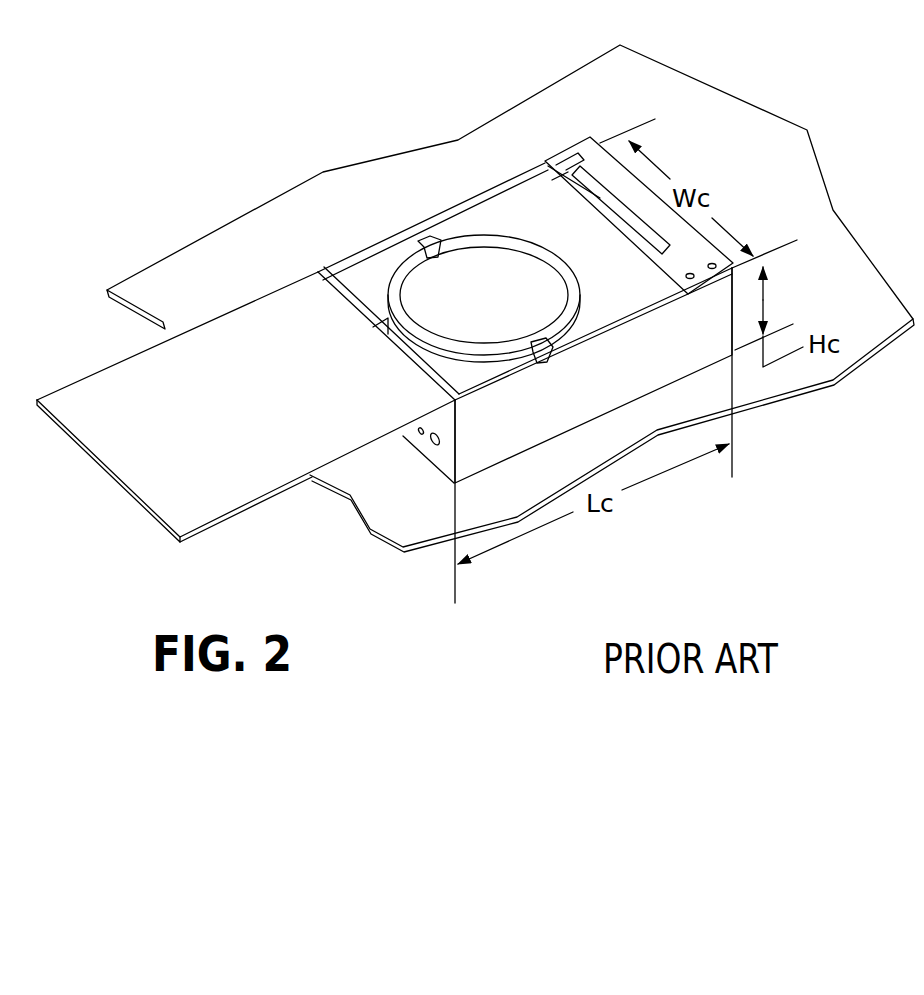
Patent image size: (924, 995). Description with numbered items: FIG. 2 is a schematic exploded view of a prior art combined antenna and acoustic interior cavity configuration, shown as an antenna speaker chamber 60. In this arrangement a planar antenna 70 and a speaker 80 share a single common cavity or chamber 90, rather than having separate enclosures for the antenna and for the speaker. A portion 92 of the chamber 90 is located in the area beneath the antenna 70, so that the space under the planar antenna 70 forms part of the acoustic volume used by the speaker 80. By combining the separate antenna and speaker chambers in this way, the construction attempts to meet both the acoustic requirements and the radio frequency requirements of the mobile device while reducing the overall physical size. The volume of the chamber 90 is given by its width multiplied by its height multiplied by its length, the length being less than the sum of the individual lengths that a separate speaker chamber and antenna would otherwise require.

The antenna speaker chamber 60 is at (276, 109).
The planar antenna 70 is at (560, 157).
The speaker 80 is at (378, 276).
The chamber 90 is at (580, 232).
The portion of the chamber 92 is at (561, 245).